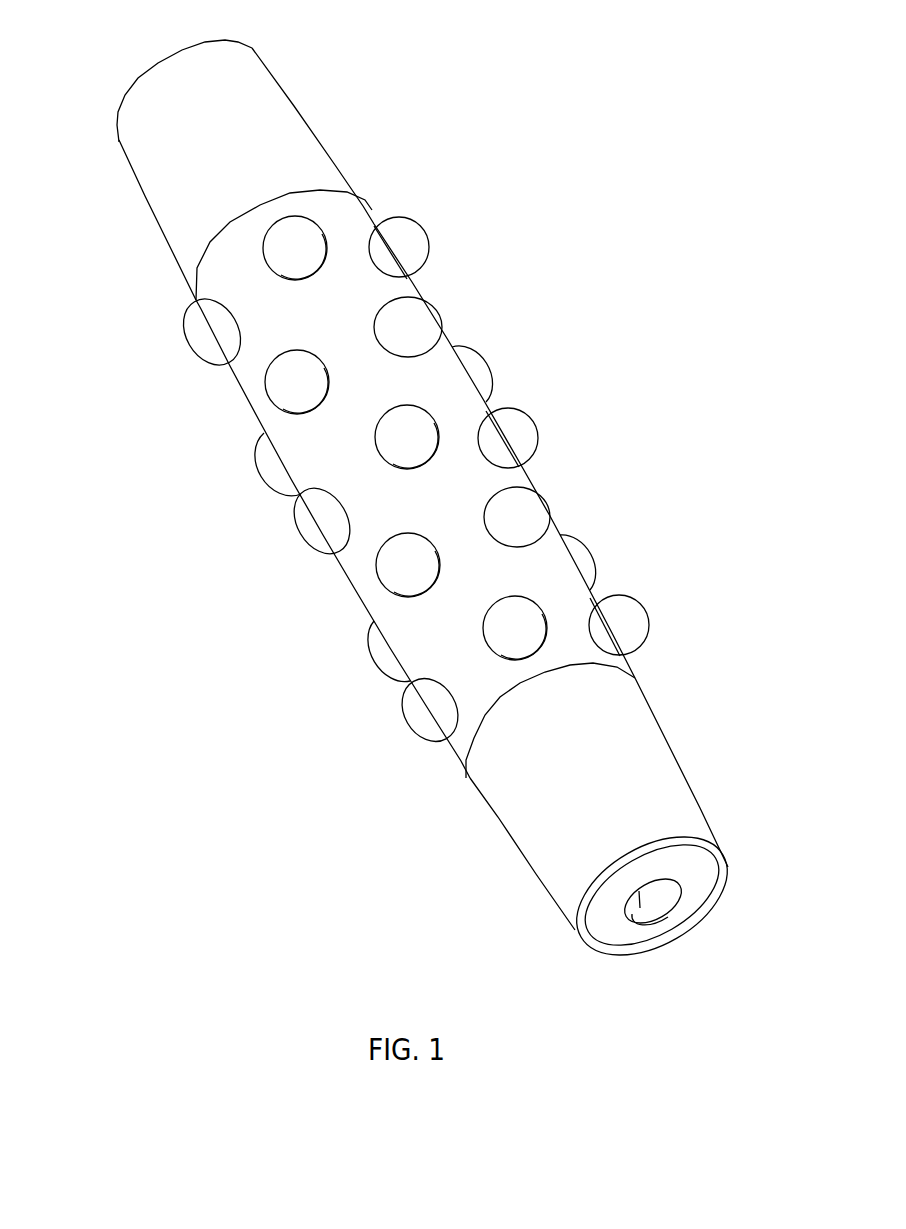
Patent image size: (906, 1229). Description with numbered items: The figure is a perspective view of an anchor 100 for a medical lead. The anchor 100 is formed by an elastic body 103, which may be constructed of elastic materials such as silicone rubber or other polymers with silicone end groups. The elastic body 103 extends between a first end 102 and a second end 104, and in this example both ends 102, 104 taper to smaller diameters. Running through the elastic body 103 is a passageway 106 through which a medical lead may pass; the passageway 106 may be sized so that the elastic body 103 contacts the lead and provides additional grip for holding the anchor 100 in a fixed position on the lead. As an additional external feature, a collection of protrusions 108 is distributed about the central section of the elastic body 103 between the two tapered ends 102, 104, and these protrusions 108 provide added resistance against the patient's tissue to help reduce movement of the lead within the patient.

The anchor 100 is at (580, 188).
The first end 102 is at (582, 917).
The elastic body 103 is at (362, 546).
The second end 104 is at (145, 170).
The passageway 106 is at (653, 902).
The protrusions 108 is at (426, 252).